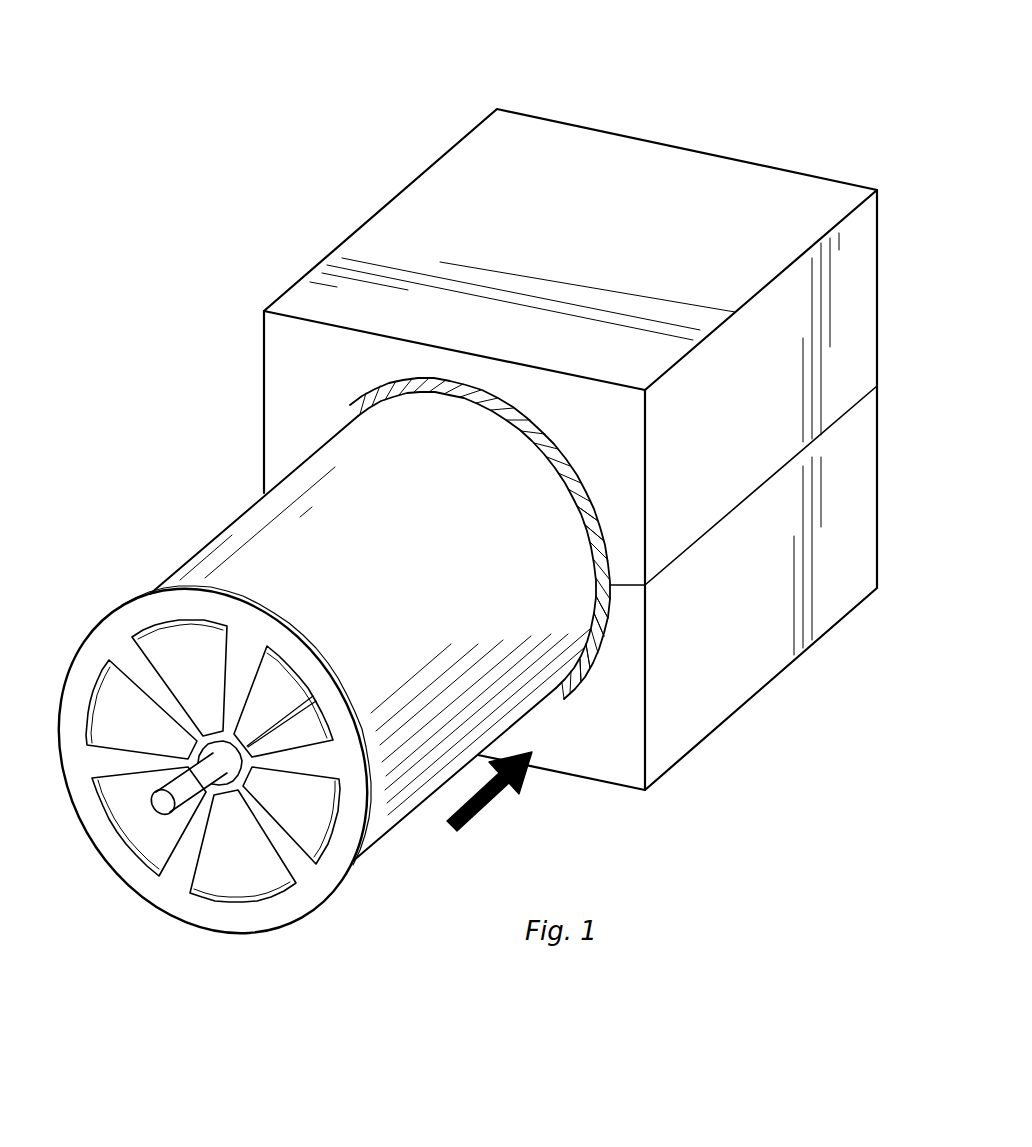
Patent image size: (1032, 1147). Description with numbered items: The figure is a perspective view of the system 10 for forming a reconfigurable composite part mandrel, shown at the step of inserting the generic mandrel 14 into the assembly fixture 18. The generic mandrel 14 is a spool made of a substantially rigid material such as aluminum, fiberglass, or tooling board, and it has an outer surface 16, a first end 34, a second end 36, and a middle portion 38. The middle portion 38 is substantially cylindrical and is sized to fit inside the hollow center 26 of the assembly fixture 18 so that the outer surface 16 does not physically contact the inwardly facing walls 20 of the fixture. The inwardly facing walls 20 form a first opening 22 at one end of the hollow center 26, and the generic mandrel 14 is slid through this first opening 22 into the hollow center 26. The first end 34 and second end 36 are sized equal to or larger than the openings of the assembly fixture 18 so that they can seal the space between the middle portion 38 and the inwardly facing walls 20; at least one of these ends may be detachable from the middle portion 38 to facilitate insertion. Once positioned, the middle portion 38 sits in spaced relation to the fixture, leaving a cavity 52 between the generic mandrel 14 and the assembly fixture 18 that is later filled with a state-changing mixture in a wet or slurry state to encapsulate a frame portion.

The system 10 is at (596, 396).
The generic mandrel 14 is at (227, 531).
The outer surface 16 is at (287, 523).
The assembly fixture 18 is at (856, 333).
The inwardly facing walls 20 is at (603, 612).
The first opening 22 is at (557, 443).
The hollow center 26 is at (600, 511).
The first end 34 is at (90, 640).
The second end 36 is at (480, 395).
The middle portion 38 is at (403, 798).
The cavity 52 is at (571, 690).